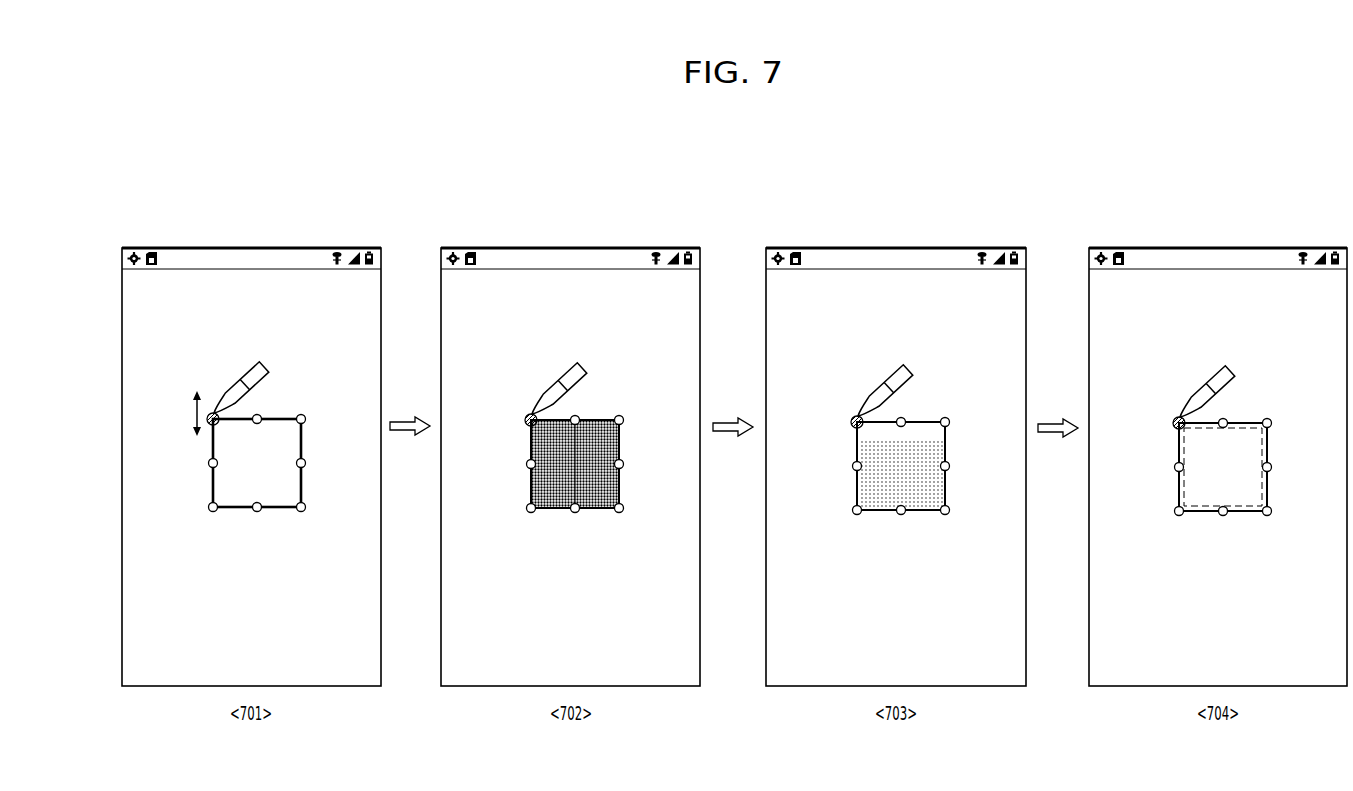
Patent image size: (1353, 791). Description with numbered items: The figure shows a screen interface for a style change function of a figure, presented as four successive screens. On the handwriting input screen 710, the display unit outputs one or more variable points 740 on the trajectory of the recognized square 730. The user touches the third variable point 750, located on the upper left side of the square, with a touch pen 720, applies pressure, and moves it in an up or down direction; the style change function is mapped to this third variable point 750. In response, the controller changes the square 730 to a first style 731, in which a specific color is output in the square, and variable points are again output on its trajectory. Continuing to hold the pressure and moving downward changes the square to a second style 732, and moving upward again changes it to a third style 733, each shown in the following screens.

The handwriting input screen 710 is at (313, 245).
The touch pen 720 is at (240, 398).
The square 730 is at (223, 448).
The variable points 740 is at (214, 507).
The third variable point 750 is at (207, 418).
The first style 731 is at (612, 485).
The partially filled object area 732 is at (936, 452).
The inner guide line / unfilled object area 733 is at (1198, 502).